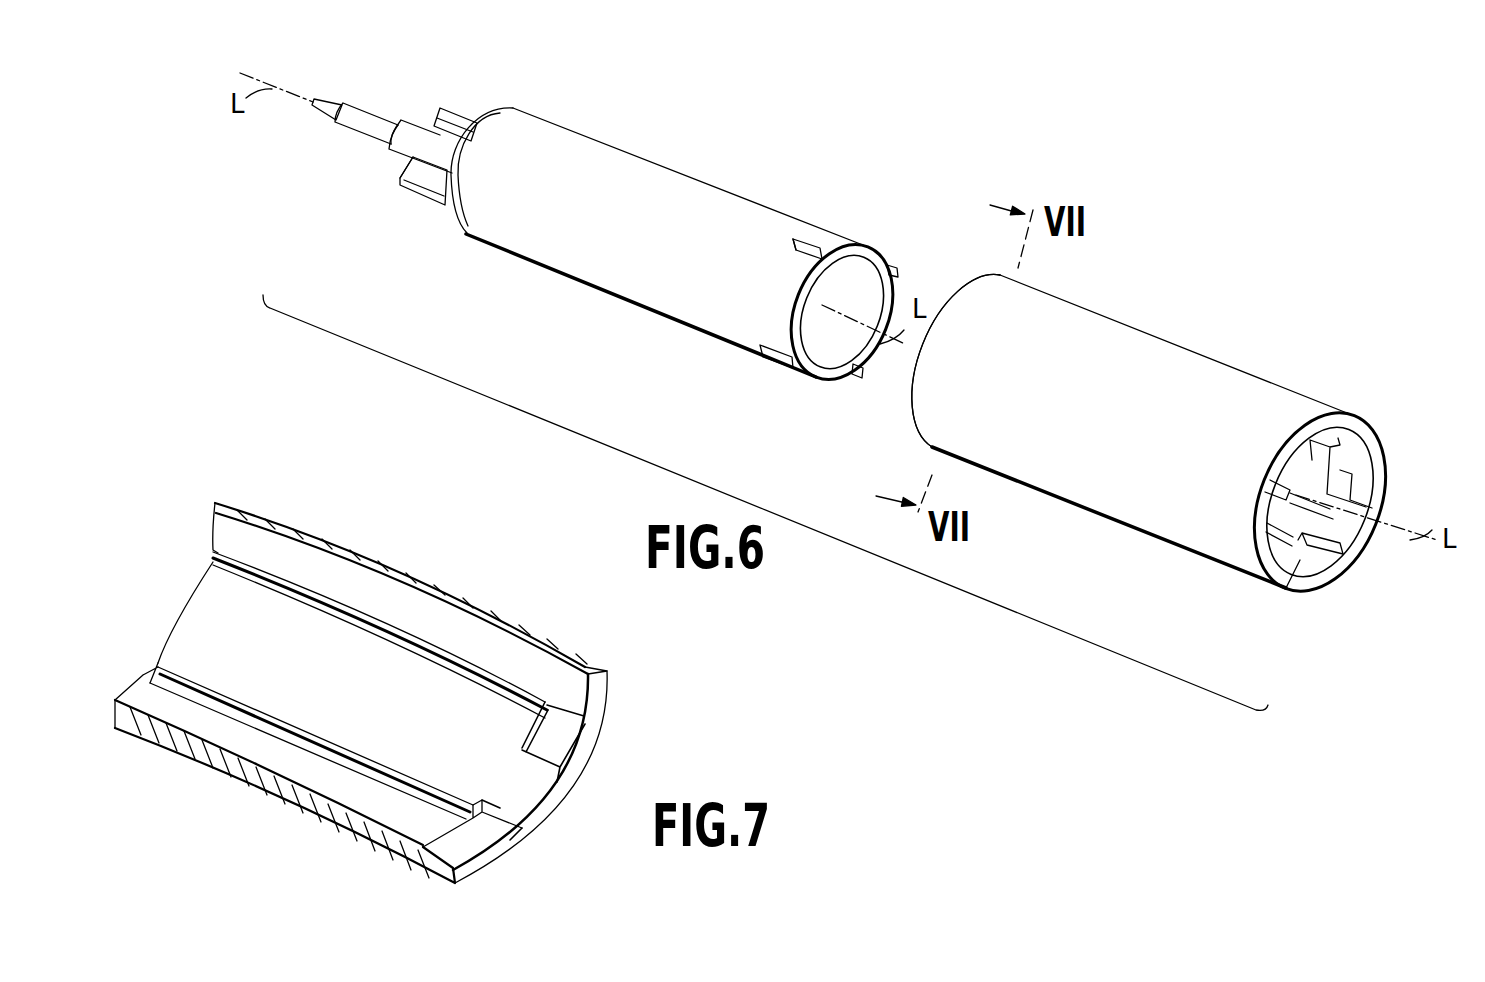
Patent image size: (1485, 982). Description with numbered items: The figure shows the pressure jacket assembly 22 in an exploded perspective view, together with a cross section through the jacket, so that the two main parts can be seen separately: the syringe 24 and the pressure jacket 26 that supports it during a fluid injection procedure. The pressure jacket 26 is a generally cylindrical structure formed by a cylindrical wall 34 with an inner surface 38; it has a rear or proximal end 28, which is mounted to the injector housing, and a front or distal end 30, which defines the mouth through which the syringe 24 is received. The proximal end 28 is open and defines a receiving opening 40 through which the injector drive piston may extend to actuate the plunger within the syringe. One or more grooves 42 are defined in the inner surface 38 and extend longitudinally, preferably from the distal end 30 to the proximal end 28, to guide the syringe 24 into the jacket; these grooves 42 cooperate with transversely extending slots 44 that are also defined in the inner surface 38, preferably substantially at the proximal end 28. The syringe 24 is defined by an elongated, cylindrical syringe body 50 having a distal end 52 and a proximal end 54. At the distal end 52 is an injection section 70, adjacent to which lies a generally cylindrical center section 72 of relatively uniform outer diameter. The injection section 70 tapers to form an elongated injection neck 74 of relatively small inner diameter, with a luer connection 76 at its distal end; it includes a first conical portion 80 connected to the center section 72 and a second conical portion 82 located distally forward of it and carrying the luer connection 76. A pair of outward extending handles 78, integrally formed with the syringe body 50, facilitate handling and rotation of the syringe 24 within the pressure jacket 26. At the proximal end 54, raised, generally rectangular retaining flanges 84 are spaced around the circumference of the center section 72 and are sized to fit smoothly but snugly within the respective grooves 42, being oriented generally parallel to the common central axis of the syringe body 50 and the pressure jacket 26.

In FIG. 6, the pressure jacket assembly 22 is at (879, 148).
In FIG. 6, the syringe 24 is at (723, 188).
In FIG. 6, the pressure jacket 26 is at (1075, 306).
In FIG. 7, the pressure jacket 26 is at (320, 538).
In FIG. 6, the proximal end 28 is at (1279, 610).
In FIG. 6, the distal end 30 is at (900, 428).
In FIG. 6, the cylindrical wall 34 is at (1265, 585).
In FIG. 7, the cylindrical wall 34 is at (545, 800).
In FIG. 6, the inner surface 38 is at (1355, 446).
In FIG. 7, the inner surface 38 is at (298, 670).
In FIG. 6, the receiving opening 40 is at (1350, 546).
In FIG. 6, the grooves 42 is at (1323, 432).
In FIG. 7, the grooves 42 is at (447, 667).
In FIG. 6, the slots 44 is at (1372, 500).
In FIG. 7, the slots 44 is at (560, 738).
In FIG. 6, the syringe body 50 is at (600, 291).
In FIG. 6, the distal end 52 is at (333, 157).
In FIG. 6, the proximal end 54 is at (802, 393).
In FIG. 6, the injection section 70 is at (427, 79).
In FIG. 6, the center section 72 is at (655, 146).
In FIG. 6, the injection neck 74 is at (460, 148).
In FIG. 6, the luer connection 76 is at (333, 112).
In FIG. 6, the handles 78 is at (442, 110).
In FIG. 6, the first conical portion 80 is at (402, 158).
In FIG. 6, the second conical portion 82 is at (352, 109).
In FIG. 6, the retaining flanges 84 is at (812, 240).